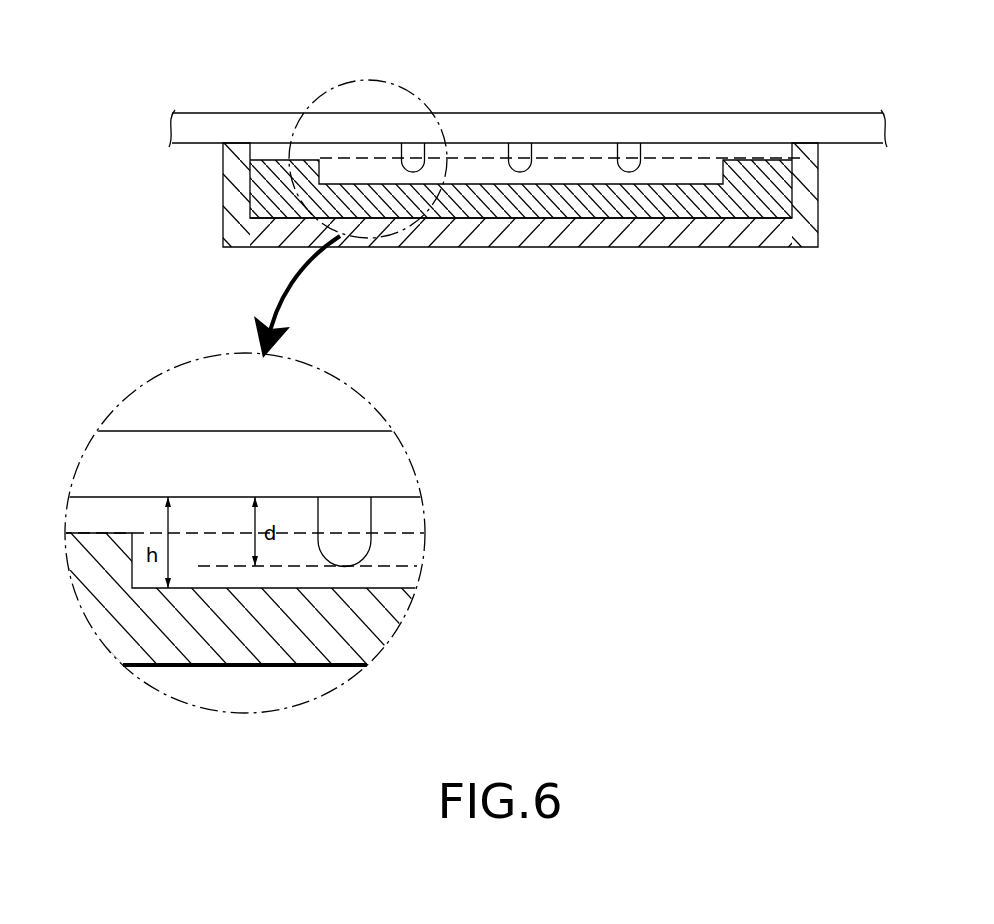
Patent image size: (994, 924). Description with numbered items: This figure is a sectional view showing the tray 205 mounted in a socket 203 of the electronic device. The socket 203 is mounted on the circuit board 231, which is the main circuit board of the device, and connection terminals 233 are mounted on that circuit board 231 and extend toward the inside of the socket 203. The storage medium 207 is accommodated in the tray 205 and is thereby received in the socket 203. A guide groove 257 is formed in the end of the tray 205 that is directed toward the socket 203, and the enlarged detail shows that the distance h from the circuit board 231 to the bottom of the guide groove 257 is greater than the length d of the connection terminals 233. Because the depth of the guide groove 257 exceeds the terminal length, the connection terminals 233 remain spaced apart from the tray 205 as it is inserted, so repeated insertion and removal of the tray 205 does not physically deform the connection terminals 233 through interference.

The circuit board 231 is at (733, 128).
The connection terminals 233 is at (520, 143).
The socket 203 is at (808, 173).
The tray 205 is at (778, 200).
The storage medium 207 is at (676, 170).
The guide groove 257 is at (562, 170).